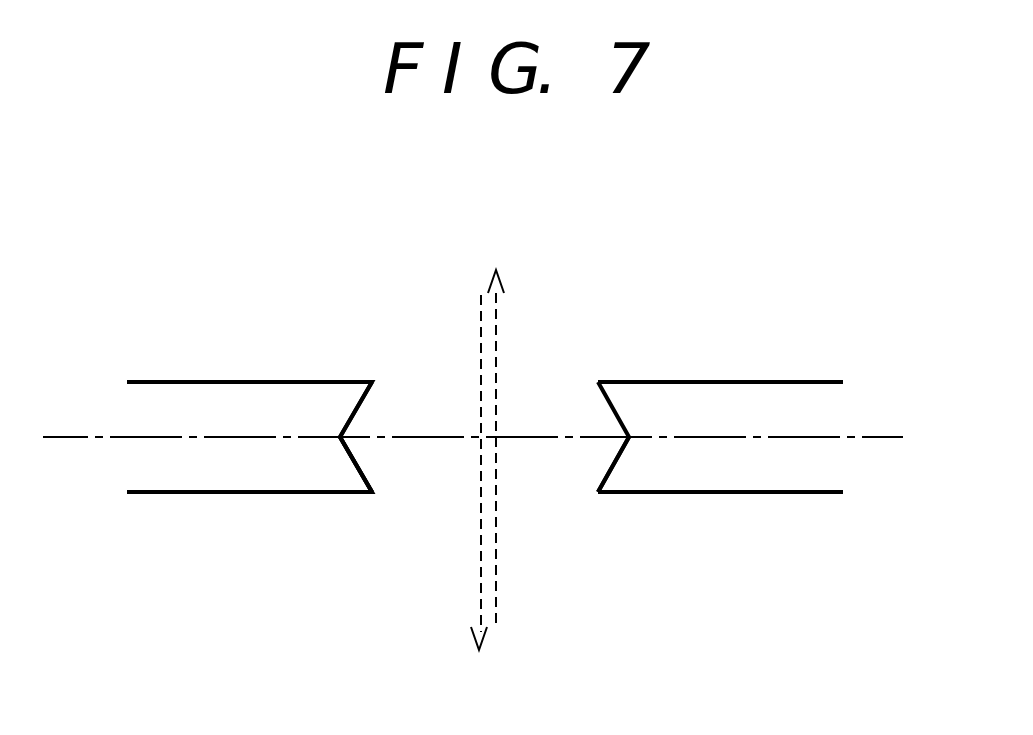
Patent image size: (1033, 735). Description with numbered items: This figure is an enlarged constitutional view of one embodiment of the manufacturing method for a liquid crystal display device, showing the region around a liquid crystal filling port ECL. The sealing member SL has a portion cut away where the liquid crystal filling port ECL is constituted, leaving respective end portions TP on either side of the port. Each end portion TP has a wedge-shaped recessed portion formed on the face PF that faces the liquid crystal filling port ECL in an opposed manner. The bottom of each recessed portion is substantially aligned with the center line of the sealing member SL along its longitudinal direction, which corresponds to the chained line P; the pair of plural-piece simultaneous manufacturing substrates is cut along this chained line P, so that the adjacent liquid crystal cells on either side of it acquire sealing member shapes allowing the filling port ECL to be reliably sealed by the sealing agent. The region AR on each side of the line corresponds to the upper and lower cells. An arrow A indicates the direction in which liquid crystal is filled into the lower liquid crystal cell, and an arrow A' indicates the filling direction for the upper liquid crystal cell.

The chained line P is at (160, 437).
The sealing member SL is at (170, 472).
The end portion TP is at (333, 398).
The face PF is at (363, 473).
The liquid crystal filling port ECL is at (455, 408).
The area AR is at (720, 421).
The arrow A is at (479, 667).
The arrow A' is at (501, 255).